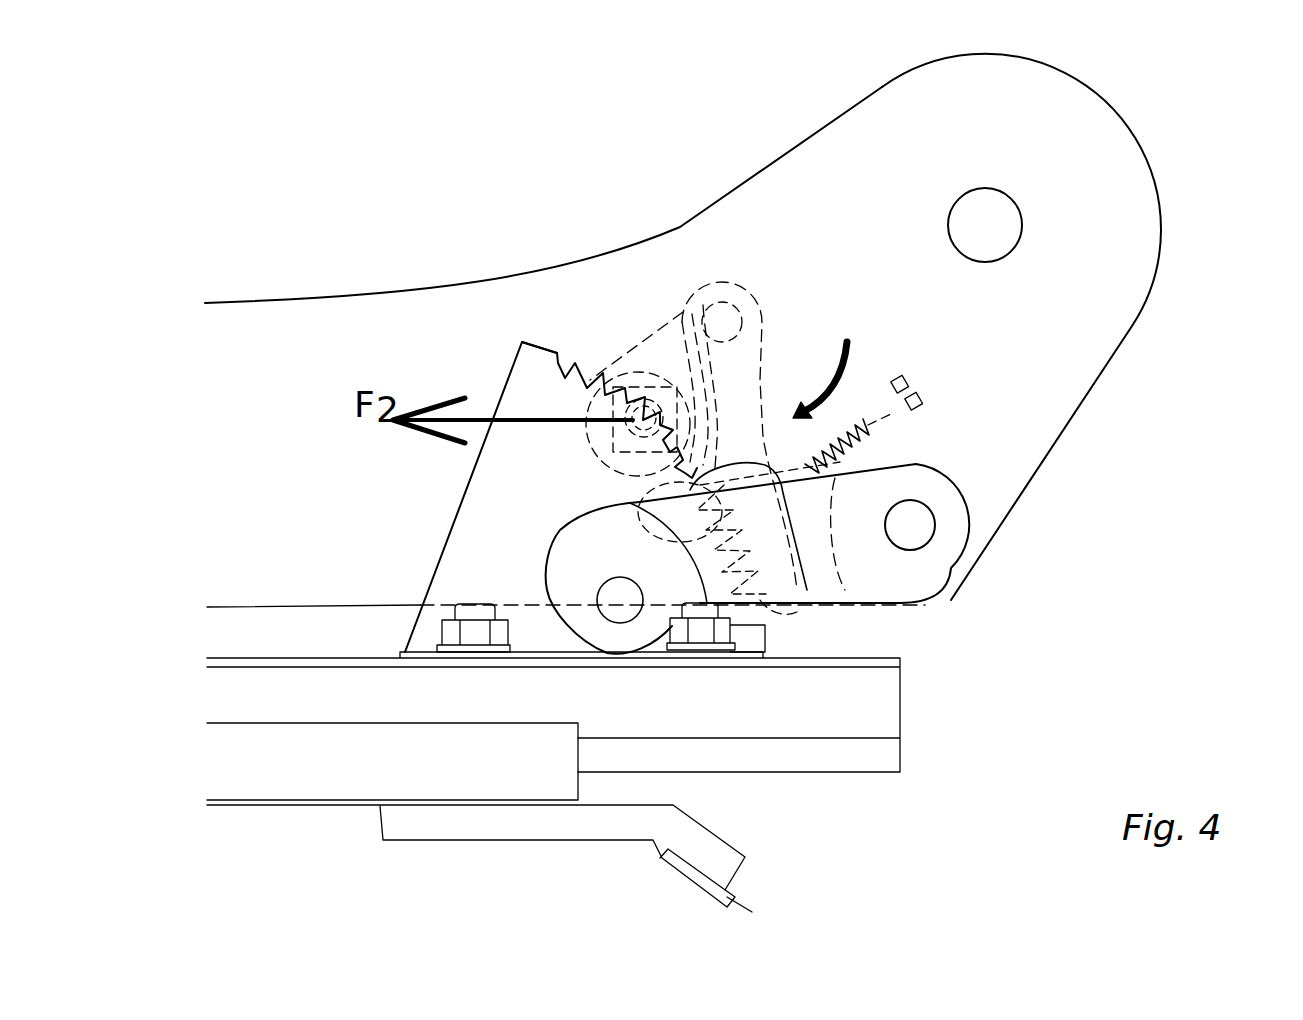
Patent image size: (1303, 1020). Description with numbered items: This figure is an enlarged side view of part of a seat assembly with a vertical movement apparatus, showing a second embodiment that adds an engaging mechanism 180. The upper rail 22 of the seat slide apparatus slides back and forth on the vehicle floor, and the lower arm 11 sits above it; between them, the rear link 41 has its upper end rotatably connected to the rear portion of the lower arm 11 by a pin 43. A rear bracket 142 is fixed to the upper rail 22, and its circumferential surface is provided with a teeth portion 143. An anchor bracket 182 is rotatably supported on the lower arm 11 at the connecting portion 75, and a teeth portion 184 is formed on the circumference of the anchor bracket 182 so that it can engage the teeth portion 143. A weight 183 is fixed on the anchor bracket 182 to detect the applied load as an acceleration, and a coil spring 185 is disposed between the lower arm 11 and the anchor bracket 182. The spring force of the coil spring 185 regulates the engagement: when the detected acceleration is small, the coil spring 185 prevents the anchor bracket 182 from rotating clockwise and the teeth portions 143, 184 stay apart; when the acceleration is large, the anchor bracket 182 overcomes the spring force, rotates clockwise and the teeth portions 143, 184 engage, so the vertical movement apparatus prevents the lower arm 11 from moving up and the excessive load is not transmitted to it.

The lower arm 11 is at (785, 193).
The upper rail 22 is at (873, 711).
The rear link 41 is at (890, 568).
The pin 43 is at (918, 525).
The connecting portion 75 is at (722, 318).
The rear bracket 142 is at (540, 372).
The teeth portion 143 is at (582, 368).
The engaging mechanism 180 is at (582, 465).
The anchor bracket 182 is at (698, 300).
The weight 183 is at (643, 383).
The teeth portion 184 is at (797, 605).
The coil spring 185 is at (866, 450).